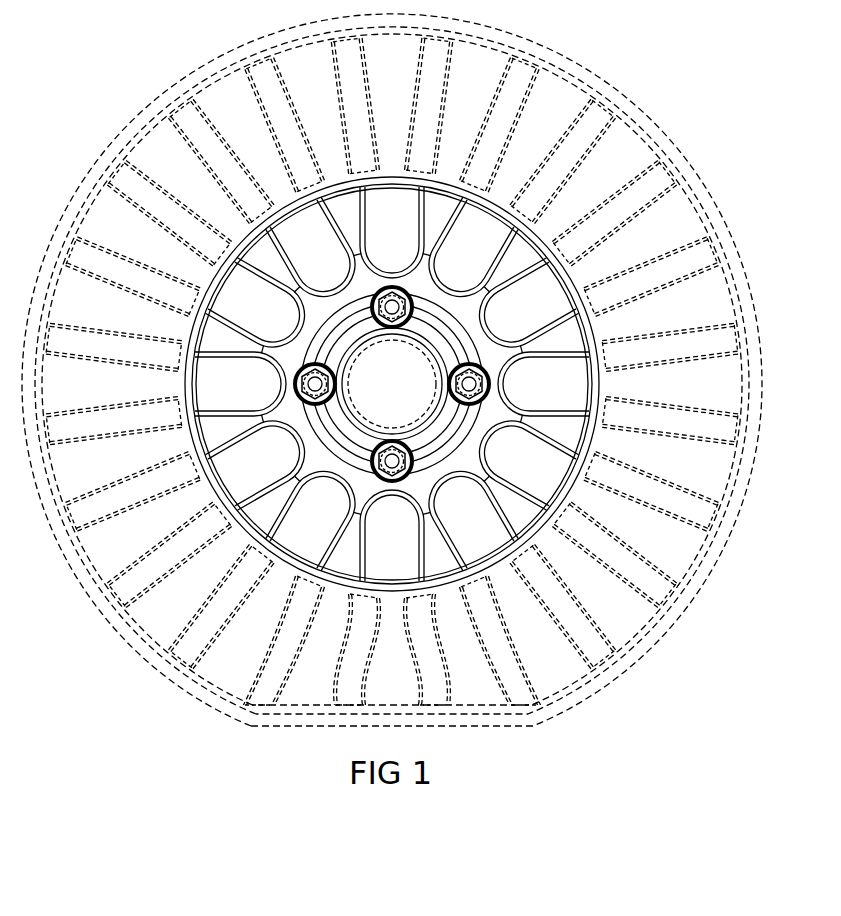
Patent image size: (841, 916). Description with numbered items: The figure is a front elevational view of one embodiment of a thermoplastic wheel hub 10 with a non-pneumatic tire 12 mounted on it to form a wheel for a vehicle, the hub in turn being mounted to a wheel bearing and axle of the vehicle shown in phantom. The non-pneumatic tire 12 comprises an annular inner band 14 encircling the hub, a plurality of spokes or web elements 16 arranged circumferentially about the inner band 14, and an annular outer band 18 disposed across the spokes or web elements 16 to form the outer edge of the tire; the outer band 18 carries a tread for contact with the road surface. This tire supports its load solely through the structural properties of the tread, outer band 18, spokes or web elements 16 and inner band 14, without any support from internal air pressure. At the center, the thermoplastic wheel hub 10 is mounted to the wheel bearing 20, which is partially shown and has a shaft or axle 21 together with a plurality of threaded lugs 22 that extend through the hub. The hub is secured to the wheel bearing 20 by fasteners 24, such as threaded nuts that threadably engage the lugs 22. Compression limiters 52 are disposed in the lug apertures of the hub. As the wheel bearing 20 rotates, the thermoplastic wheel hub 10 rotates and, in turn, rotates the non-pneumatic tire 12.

The thermoplastic wheel hub 10 is at (658, 94).
The non-pneumatic tire 12 is at (116, 119).
The annular inner band 14 is at (700, 210).
The spokes or web elements 16 is at (660, 201).
The annular outer band 18 is at (232, 68).
The wheel bearing 20 is at (389, 379).
The shaft or axle 21 is at (430, 373).
The threaded lugs 22 is at (397, 384).
The fasteners 24 is at (392, 384).
The compression limiters 52 is at (392, 384).